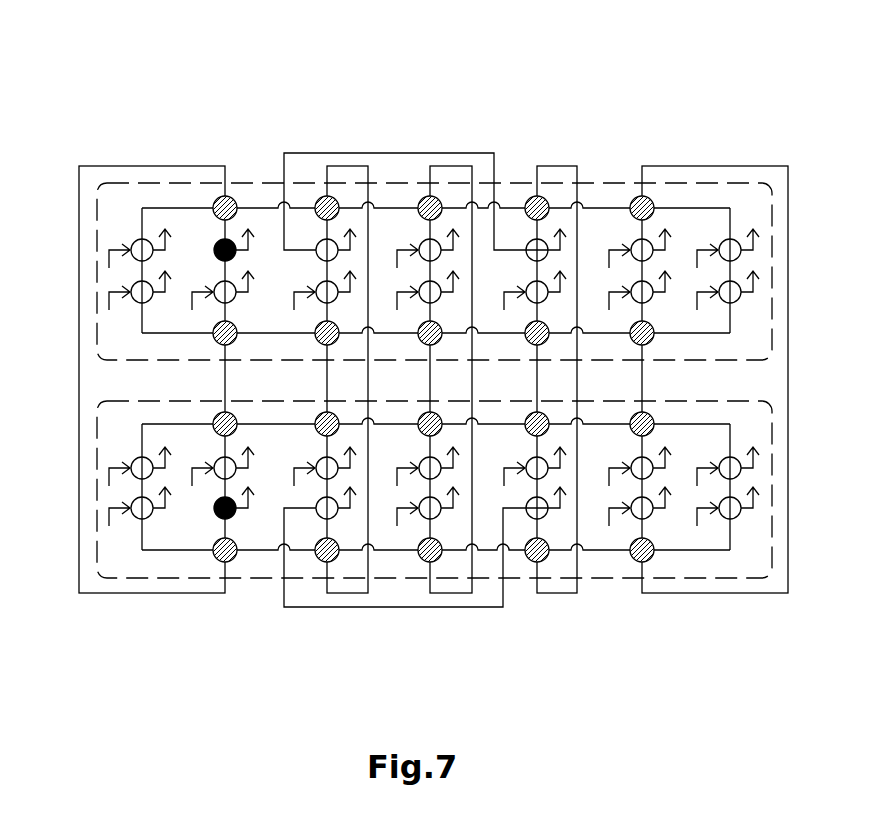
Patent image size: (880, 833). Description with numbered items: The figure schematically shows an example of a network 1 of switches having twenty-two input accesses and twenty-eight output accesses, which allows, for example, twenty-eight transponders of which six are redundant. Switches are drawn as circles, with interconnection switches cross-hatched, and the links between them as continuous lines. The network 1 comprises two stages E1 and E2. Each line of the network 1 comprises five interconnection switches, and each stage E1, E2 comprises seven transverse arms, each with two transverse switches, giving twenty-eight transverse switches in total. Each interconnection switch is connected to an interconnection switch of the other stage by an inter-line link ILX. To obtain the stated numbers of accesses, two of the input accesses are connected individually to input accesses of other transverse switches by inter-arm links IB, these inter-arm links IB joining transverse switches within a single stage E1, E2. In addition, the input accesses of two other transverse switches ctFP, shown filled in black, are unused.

The network of switches 1 is at (494, 94).
The inter-line link ILX is at (700, 100).
The inter-arm link IB is at (397, 152).
The first stage E1 is at (97, 227).
The second stage E2 is at (614, 578).
The transverse switch with unused input access ctFP is at (196, 622).